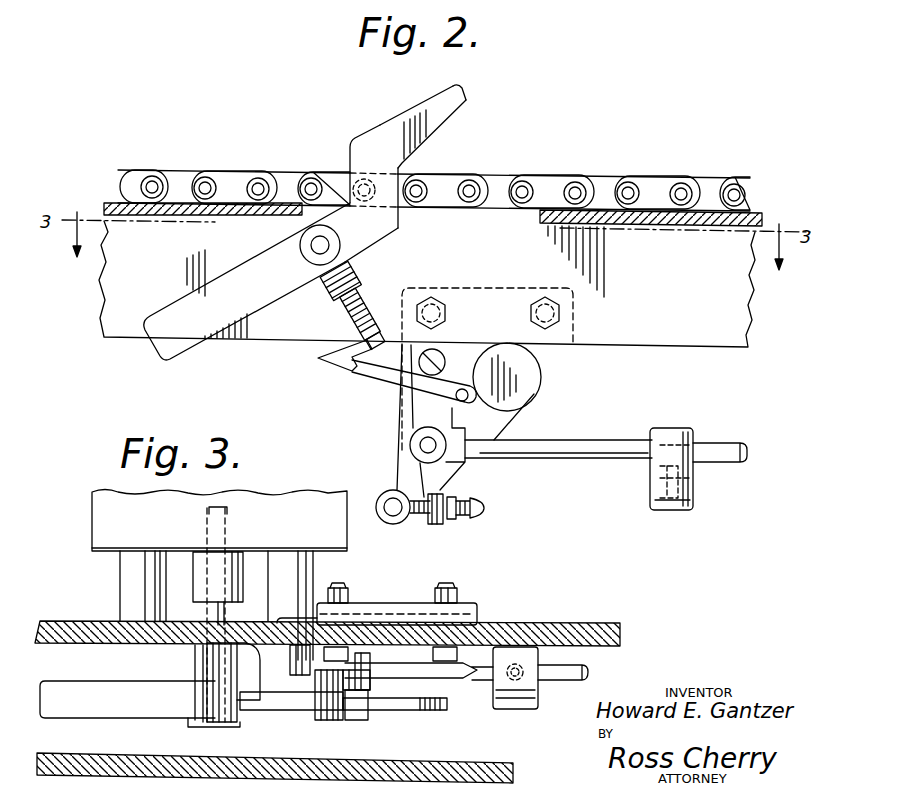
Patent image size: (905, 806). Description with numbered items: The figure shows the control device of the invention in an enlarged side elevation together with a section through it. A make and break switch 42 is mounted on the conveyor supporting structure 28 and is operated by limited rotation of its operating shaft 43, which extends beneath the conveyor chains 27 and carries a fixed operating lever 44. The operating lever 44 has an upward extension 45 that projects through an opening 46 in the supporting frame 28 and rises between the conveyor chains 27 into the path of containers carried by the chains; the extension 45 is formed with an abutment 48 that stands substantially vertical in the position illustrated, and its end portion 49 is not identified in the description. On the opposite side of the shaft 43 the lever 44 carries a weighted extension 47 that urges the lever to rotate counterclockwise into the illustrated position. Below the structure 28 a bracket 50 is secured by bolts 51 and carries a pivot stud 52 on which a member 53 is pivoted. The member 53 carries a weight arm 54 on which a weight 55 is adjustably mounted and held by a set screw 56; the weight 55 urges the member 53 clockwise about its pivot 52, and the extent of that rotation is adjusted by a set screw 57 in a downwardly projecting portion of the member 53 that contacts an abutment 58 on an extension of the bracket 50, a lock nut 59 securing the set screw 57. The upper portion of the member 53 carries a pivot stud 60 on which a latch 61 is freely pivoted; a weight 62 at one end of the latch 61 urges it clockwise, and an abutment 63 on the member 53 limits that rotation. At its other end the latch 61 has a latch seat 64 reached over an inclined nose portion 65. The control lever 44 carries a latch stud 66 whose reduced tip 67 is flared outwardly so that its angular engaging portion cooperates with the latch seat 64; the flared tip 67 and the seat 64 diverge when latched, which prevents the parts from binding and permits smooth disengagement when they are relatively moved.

In FIG. 2, the conveyor chains 27 is at (190, 152).
In FIG. 2, the conveyor supporting structure 28 is at (170, 211).
In FIG. 3, the conveyor supporting structure 28 is at (90, 602).
In FIG. 3, the make and break switch 42 is at (102, 497).
In FIG. 2, the operating shaft 43 is at (312, 245).
In FIG. 3, the operating shaft 43 is at (207, 523).
In FIG. 2, the operating lever 44 is at (376, 239).
In FIG. 3, the operating lever 44 is at (262, 720).
In FIG. 2, the upward extension 45 is at (392, 128).
In FIG. 3, the upward extension 45 is at (304, 712).
In FIG. 2, the opening 46 is at (546, 221).
In FIG. 2, the weighted extension 47 is at (193, 345).
In FIG. 3, the weighted extension 47 is at (120, 690).
In FIG. 2, the abutment 48 is at (350, 152).
In FIG. 2, the lever tip 49 is at (423, 102).
In FIG. 2, the bracket 50 is at (575, 372).
In FIG. 3, the bracket 50 is at (399, 610).
In FIG. 2, the bolts 51 is at (448, 311).
In FIG. 3, the bolts 51 is at (347, 594).
In FIG. 2, the pivot stud 52 is at (422, 445).
In FIG. 2, the member 53 is at (408, 412).
In FIG. 3, the member 53 is at (328, 720).
In FIG. 2, the weight arm 54 is at (580, 456).
In FIG. 3, the weight arm 54 is at (455, 680).
In FIG. 2, the weight 55 is at (668, 431).
In FIG. 3, the weight 55 is at (536, 700).
In FIG. 2, the set screw 56 is at (690, 486).
In FIG. 3, the set screw 56 is at (512, 702).
In FIG. 2, the set screw 57 is at (484, 511).
In FIG. 2, the abutment 58 is at (391, 521).
In FIG. 3, the abutment 58 is at (288, 688).
In FIG. 2, the lock nut 59 is at (445, 527).
In FIG. 2, the pivot stud 60 is at (440, 354).
In FIG. 3, the pivot stud 60 is at (352, 700).
In FIG. 2, the latch 61 is at (378, 369).
In FIG. 2, the weight 62 is at (540, 388).
In FIG. 3, the weight 62 is at (421, 711).
In FIG. 2, the abutment 63 is at (455, 396).
In FIG. 3, the abutment 63 is at (365, 712).
In FIG. 2, the latch seat 64 is at (345, 368).
In FIG. 2, the inclined nose portion 65 is at (352, 345).
In FIG. 2, the latch stud 66 is at (362, 292).
In FIG. 2, the reduced tip 67 is at (371, 323).